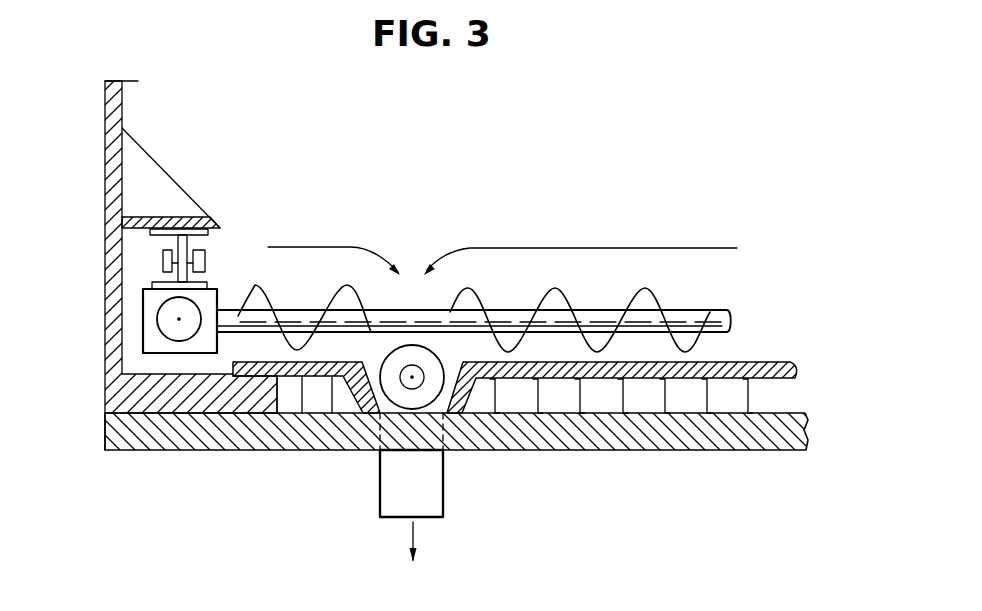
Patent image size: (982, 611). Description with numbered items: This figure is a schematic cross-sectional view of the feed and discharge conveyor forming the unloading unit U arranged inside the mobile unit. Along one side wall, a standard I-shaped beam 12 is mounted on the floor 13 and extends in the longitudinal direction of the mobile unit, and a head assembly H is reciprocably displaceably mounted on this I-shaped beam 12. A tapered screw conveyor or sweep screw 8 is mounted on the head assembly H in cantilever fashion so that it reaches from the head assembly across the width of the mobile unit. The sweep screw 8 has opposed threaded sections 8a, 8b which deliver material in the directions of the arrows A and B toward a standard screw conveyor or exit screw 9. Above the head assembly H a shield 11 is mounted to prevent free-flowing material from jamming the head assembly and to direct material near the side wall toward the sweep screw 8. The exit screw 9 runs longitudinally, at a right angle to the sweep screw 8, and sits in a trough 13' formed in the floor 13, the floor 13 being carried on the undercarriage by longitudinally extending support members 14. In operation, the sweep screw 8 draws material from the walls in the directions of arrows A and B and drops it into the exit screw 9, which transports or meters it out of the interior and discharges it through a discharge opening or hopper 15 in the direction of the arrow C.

The tapered screw conveyor or sweep screw 8 is at (474, 262).
The threaded section 8a is at (347, 272).
The threaded section 8b is at (557, 287).
The screw conveyor or exit screw 9 is at (437, 382).
The shield 11 is at (172, 178).
The I-shaped beam 12 is at (152, 242).
The floor 13 is at (641, 365).
The trough 13' is at (306, 425).
The support members 14 is at (752, 400).
The discharge opening or hopper 15 is at (443, 500).
The arrow A is at (306, 247).
The arrow B is at (508, 248).
The arrow C is at (410, 536).
The head assembly H is at (100, 331).
The unloading unit U is at (260, 133).